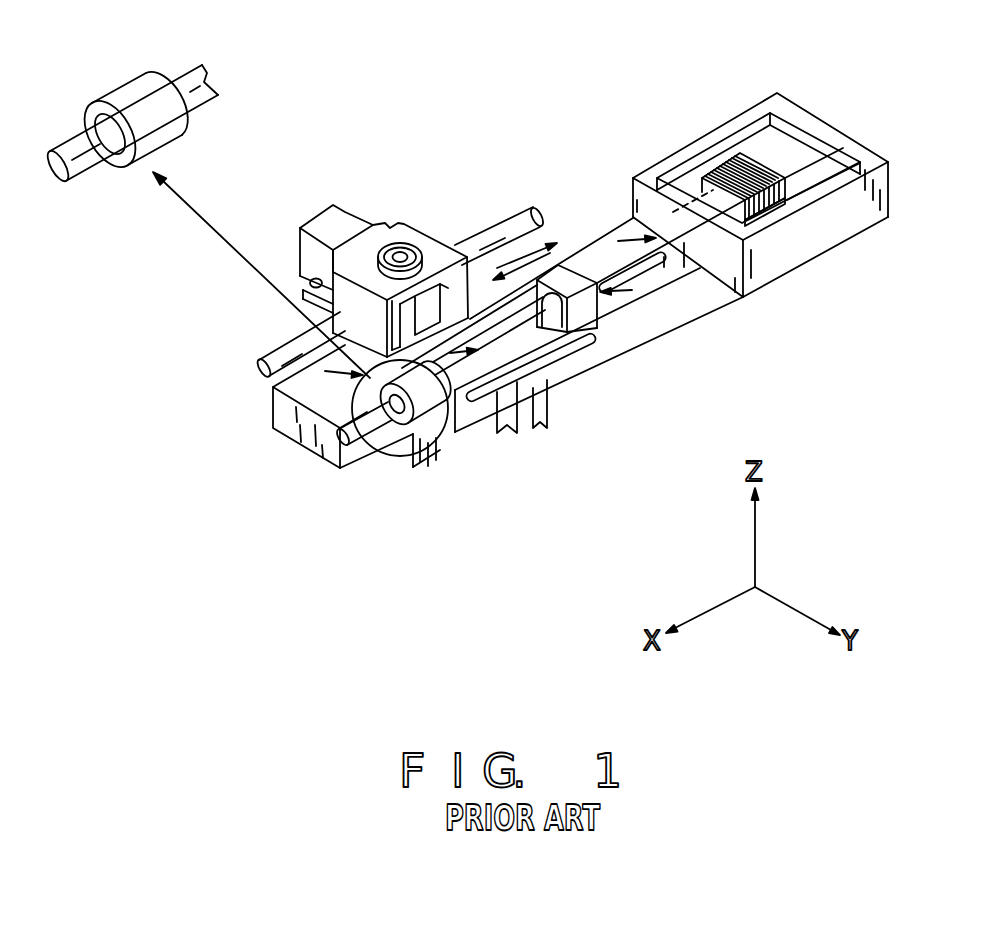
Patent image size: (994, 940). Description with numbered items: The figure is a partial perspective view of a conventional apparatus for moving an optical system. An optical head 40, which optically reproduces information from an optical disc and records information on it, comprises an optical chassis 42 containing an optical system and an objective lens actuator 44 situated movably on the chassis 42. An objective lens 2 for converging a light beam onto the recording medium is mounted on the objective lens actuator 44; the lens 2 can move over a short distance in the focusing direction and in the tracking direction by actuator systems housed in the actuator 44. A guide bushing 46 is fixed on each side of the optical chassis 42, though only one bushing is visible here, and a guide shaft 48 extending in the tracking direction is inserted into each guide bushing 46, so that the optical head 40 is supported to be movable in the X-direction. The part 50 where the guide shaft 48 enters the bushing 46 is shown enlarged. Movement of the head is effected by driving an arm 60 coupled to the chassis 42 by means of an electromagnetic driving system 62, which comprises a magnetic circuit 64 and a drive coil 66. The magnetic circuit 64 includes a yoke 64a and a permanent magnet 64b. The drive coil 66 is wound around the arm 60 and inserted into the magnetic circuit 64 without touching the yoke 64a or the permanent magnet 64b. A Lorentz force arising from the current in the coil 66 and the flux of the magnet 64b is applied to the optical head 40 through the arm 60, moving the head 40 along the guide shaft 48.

The objective lens 2 is at (403, 224).
The optical head 40 is at (258, 413).
The optical chassis 42 is at (347, 465).
The objective lens actuator 44 is at (373, 224).
The guide bushing 46 is at (152, 88).
The guide shaft 48 is at (206, 92).
The part where the guide shaft is inserted into the bushing 50 is at (231, 53).
The arm 60 is at (650, 320).
The electromagnetic driving system 62 is at (787, 107).
The magnetic circuit 64 is at (884, 284).
The yoke 64a is at (777, 212).
The permanent magnet 64b is at (803, 212).
The drive coil 66 is at (718, 166).